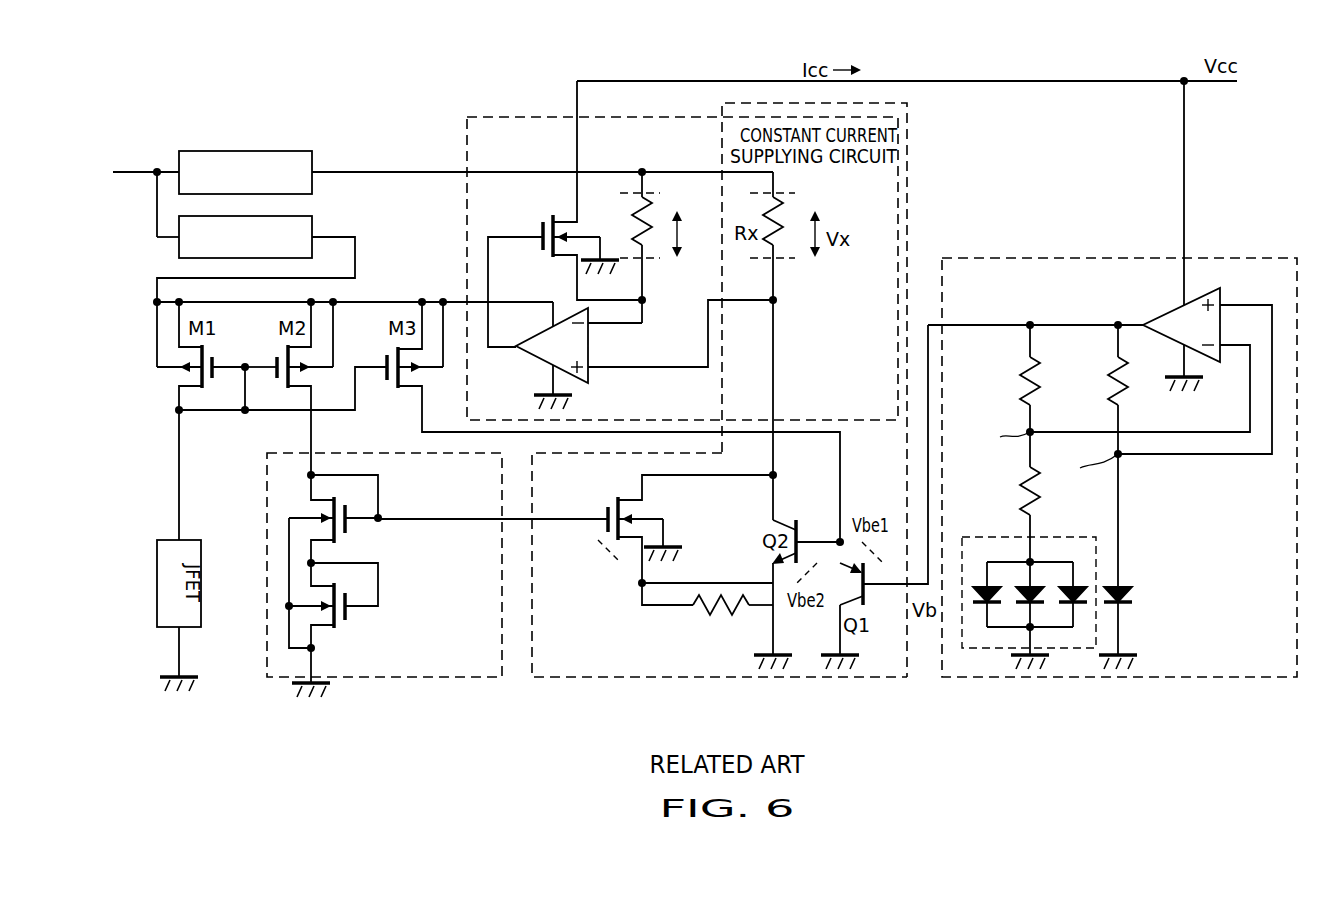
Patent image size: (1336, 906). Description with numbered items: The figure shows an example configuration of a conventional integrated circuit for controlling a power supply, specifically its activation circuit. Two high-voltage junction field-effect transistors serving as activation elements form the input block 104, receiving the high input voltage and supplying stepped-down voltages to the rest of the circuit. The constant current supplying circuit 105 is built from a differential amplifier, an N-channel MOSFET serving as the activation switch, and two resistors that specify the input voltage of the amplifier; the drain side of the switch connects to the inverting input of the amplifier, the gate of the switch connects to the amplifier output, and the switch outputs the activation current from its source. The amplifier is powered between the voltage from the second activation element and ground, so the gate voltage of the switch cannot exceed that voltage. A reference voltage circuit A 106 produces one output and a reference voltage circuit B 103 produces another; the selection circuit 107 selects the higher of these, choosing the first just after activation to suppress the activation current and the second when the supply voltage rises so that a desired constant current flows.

The reference voltage circuit B (bandgap reference voltage circuit) 103 is at (1260, 270).
The high-voltage JFET input circuit 104 is at (162, 263).
The constant current supplying circuit 105 is at (512, 117).
The reference voltage circuit A 106 is at (433, 672).
The selection circuit 107 is at (715, 668).